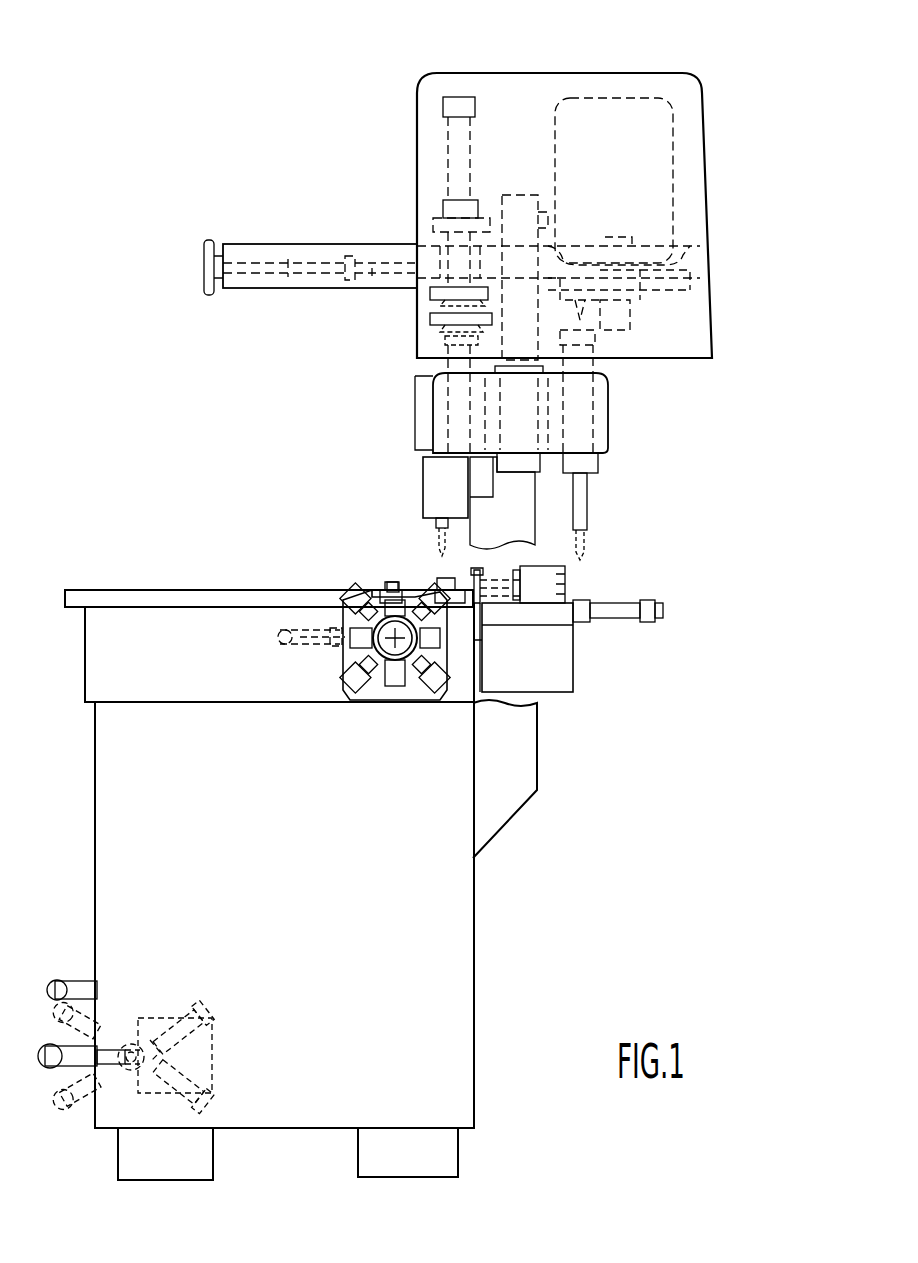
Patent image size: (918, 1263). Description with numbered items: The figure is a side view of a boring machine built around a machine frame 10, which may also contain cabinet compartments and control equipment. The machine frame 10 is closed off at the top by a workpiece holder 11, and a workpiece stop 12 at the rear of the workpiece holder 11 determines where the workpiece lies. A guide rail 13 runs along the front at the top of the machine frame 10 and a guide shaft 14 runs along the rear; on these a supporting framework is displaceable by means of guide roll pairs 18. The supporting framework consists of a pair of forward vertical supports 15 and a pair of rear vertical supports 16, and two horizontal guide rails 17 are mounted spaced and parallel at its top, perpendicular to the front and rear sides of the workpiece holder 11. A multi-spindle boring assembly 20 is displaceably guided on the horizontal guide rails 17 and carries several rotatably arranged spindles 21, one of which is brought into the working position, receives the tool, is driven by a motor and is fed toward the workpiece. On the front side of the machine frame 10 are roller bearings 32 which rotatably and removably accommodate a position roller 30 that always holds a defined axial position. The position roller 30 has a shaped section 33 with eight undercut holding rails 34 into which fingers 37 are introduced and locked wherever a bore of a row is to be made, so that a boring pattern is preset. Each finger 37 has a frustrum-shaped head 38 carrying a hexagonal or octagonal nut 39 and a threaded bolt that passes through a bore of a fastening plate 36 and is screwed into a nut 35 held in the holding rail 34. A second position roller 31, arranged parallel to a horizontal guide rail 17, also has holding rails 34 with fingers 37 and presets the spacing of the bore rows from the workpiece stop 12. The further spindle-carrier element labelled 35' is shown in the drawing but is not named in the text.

The machine frame 10 is at (455, 918).
The workpiece holder 11 is at (128, 596).
The workpiece stop 12 is at (375, 600).
The guide rail 13 is at (400, 590).
The guide shaft 14 is at (440, 580).
The forward vertical supports 15 is at (558, 658).
The rear vertical supports 16 is at (628, 610).
The horizontal guide rails 17 is at (565, 582).
The guide roll pairs 18 is at (470, 563).
The multi-spindle boring assembly 20 is at (382, 697).
The spindles 21 is at (305, 610).
The position roller 30 is at (533, 92).
The position roller 31 is at (316, 244).
The roller bearings 32 is at (205, 258).
The shaped section 33 is at (535, 508).
The holding rails 34 is at (430, 127).
The nut 35 is at (408, 489).
The spindle carrier 35' is at (547, 409).
The fastening plate 36 is at (514, 195).
The fingers 37 is at (648, 100).
The frustrum-shaped head 38 is at (292, 290).
The hexagonal or octagonal nut 39 is at (372, 290).